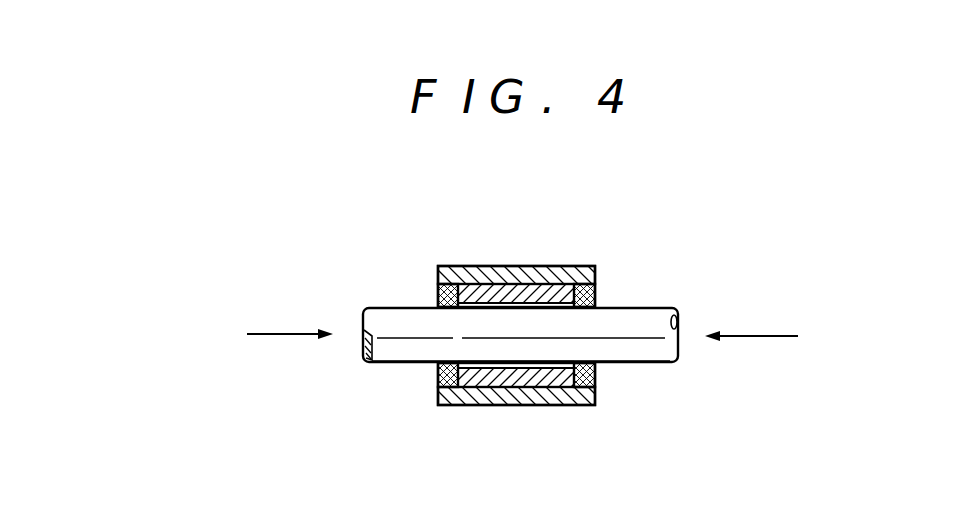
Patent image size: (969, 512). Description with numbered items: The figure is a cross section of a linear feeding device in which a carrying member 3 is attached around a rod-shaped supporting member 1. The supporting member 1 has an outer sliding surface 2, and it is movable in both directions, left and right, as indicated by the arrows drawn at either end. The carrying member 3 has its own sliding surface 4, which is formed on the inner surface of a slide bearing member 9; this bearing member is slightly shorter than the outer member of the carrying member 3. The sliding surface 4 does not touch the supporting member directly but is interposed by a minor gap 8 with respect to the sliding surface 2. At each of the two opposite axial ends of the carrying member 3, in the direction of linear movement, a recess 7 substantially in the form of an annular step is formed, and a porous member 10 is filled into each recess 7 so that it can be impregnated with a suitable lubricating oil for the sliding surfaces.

The rod-shaped supporting member 1 is at (677, 312).
The sliding surface of the supporting member 2 is at (557, 405).
The carrying member 3 is at (542, 276).
The sliding surface of the carrying member 4 is at (480, 364).
The recess 7 is at (438, 290).
The minor gap 8 is at (514, 370).
The slide bearing member 9 is at (490, 292).
The porous member 10 is at (440, 292).